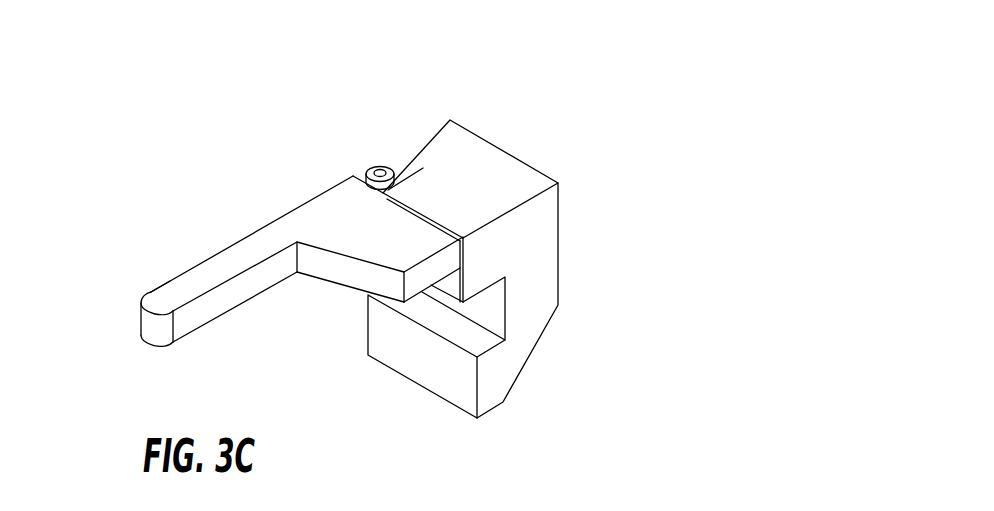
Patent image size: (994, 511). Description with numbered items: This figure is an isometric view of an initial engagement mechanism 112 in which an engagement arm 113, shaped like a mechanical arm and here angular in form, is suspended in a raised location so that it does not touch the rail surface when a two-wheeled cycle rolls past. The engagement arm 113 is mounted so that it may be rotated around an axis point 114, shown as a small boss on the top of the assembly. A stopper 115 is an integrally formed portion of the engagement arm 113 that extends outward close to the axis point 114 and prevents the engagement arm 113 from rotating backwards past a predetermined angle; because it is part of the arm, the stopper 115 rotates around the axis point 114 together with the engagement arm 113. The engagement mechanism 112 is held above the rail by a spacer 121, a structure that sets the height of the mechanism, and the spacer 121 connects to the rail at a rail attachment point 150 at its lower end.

The initial engagement mechanism 112 is at (607, 169).
The engagement arm 113 is at (165, 298).
The axis point 114 is at (380, 170).
The stopper 115 is at (368, 247).
The spacer 121 is at (542, 278).
The rail attachment point 150 is at (453, 378).